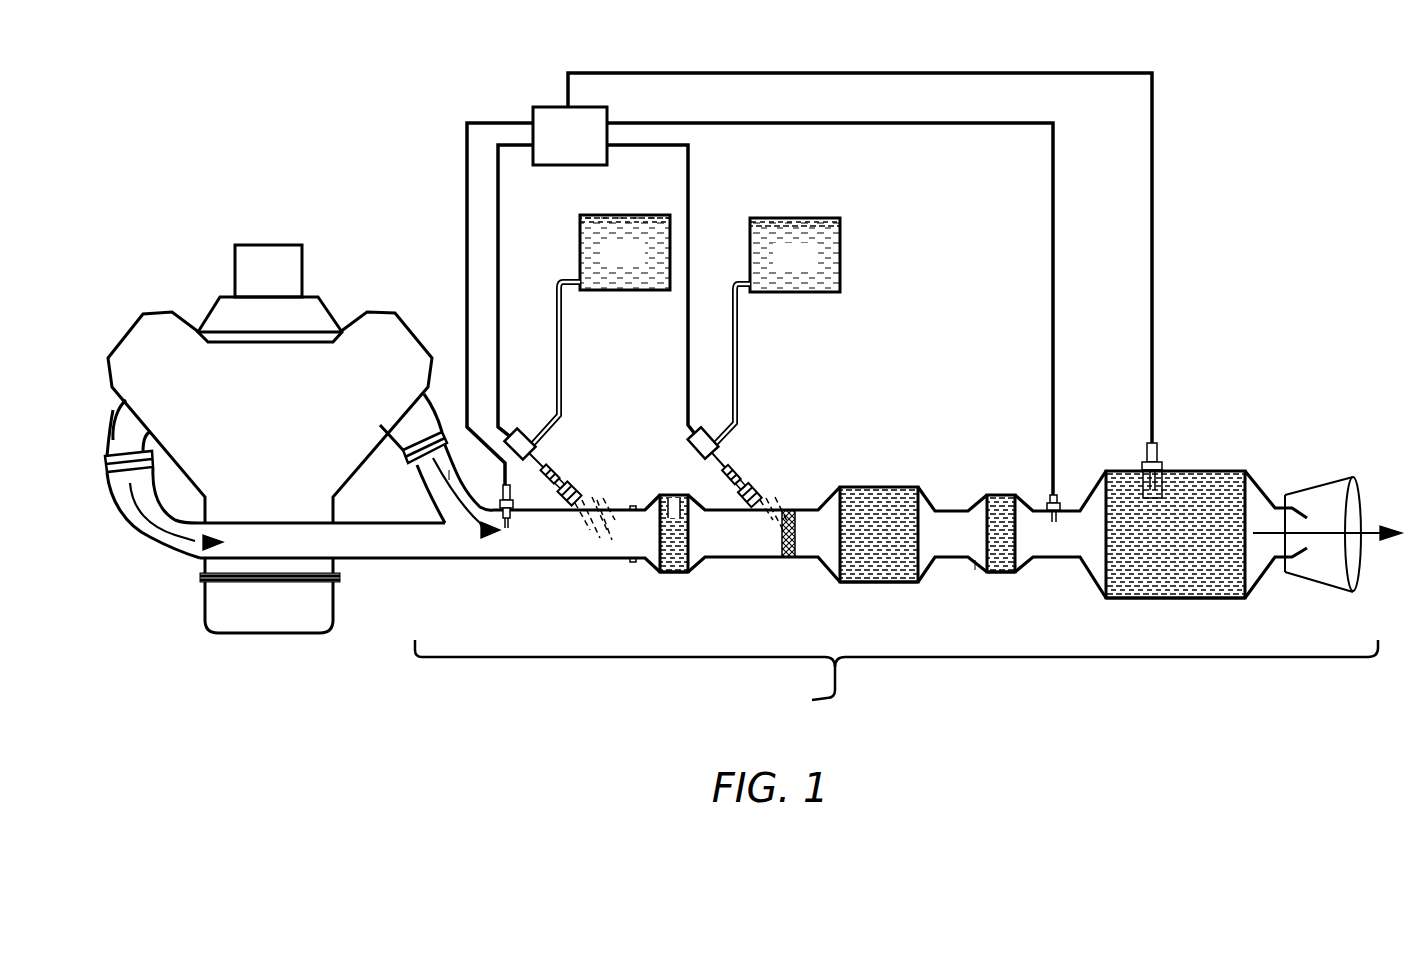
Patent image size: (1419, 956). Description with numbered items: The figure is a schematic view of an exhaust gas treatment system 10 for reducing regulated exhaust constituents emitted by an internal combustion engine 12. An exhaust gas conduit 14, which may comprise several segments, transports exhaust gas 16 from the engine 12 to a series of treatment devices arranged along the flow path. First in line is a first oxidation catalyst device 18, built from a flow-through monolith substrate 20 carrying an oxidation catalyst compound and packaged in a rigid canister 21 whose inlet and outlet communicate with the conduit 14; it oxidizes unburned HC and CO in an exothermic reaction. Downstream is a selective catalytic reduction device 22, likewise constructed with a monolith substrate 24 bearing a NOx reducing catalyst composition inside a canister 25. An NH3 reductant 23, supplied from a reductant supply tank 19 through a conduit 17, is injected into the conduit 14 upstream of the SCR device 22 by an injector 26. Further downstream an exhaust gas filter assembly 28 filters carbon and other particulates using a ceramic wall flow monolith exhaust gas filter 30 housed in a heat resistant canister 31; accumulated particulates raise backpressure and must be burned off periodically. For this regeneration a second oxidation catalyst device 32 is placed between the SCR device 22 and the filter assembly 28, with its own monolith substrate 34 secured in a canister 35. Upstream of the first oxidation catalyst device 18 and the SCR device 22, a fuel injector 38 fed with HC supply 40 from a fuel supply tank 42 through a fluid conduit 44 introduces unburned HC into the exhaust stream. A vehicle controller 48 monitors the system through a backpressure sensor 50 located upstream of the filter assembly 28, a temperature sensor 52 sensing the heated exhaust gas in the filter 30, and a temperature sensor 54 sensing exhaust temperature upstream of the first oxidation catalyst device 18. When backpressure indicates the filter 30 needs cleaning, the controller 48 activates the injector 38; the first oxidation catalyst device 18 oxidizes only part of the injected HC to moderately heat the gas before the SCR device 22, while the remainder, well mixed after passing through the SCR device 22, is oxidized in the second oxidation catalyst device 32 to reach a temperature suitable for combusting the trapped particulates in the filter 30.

The exhaust gas treatment system 10 is at (896, 678).
The internal combustion engine 12 is at (192, 297).
The exhaust gas conduit 14 is at (403, 558).
The exhaust gas 16 is at (155, 545).
The conduit 17 is at (740, 402).
The first oxidation catalyst device 18 is at (655, 575).
The reductant supply tank 19 is at (791, 208).
The monolith substrate 20 is at (675, 515).
The canister 21 is at (684, 577).
The selective catalytic reduction device 22 is at (838, 586).
The NH3 reductant 23 is at (789, 386).
The monolith substrate 24 is at (875, 512).
The canister 25 is at (878, 583).
The injector 26 is at (745, 478).
The exhaust gas filter assembly 28 is at (1255, 598).
The ceramic wall flow monolith exhaust gas filter 30 is at (1208, 580).
The canister 31 is at (1133, 598).
The second oxidation catalyst device 32 is at (449, 472).
The monolith substrate 34 is at (1000, 510).
The canister 35 is at (1000, 573).
The fuel injector 38 is at (555, 460).
The HC supply 40 is at (607, 505).
The fuel supply tank 42 is at (615, 205).
The fluid conduit 44 is at (566, 392).
The vehicle controller 48 is at (570, 136).
The backpressure sensor 50 is at (1060, 498).
The temperature sensor 52 is at (1160, 455).
The temperature sensor 54 is at (513, 520).